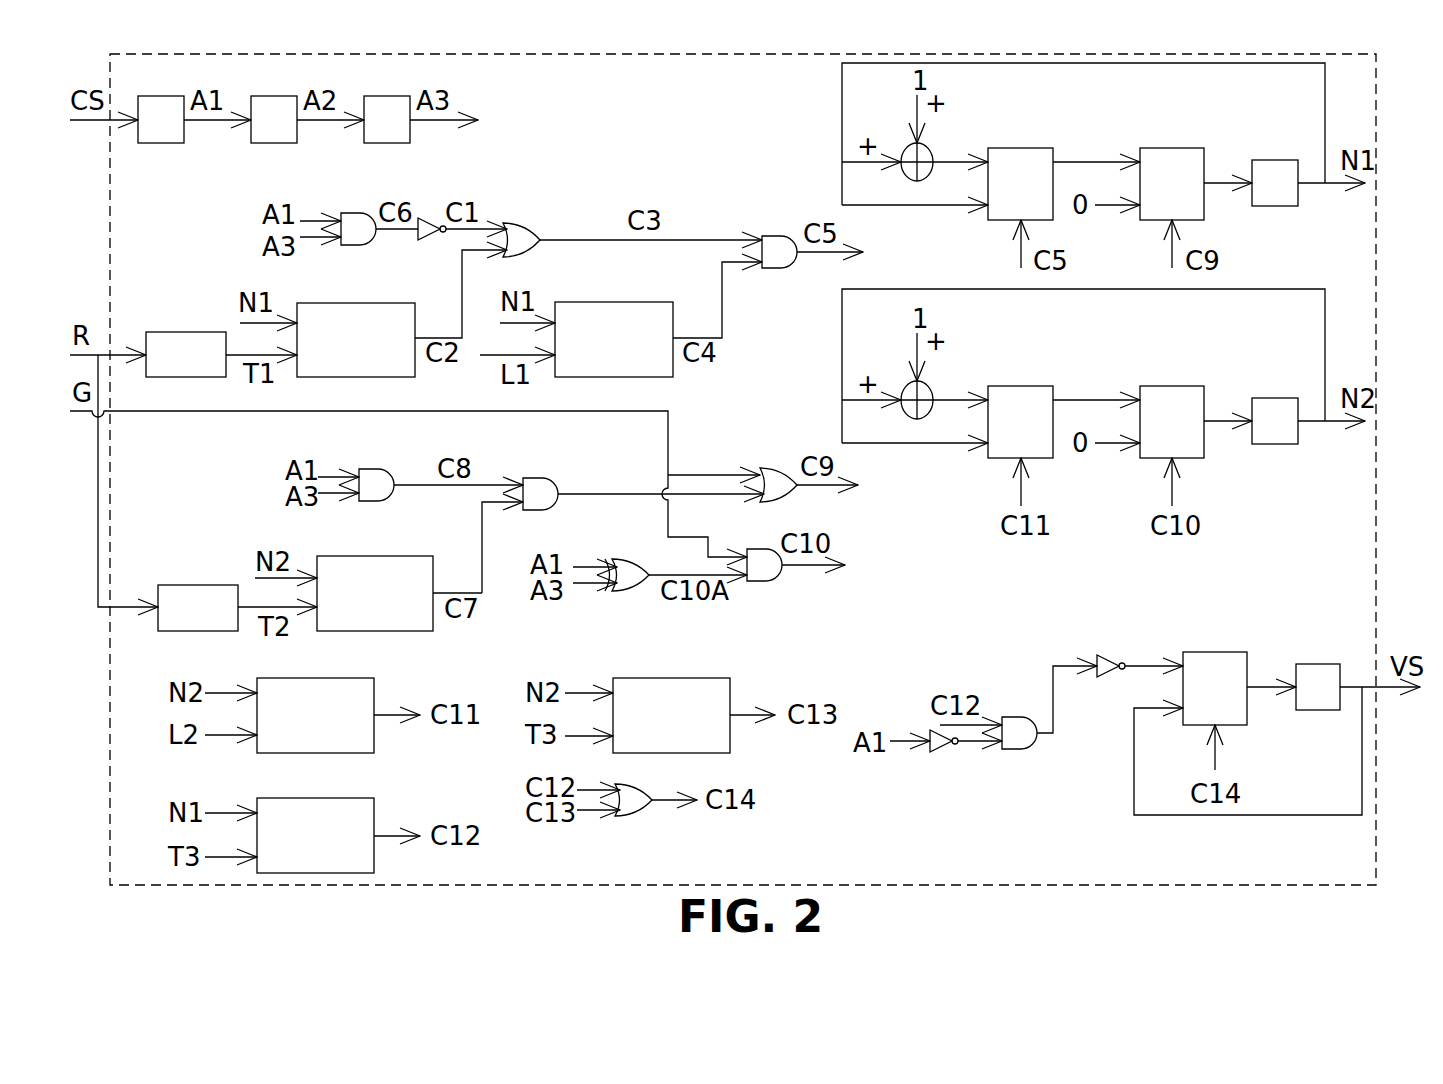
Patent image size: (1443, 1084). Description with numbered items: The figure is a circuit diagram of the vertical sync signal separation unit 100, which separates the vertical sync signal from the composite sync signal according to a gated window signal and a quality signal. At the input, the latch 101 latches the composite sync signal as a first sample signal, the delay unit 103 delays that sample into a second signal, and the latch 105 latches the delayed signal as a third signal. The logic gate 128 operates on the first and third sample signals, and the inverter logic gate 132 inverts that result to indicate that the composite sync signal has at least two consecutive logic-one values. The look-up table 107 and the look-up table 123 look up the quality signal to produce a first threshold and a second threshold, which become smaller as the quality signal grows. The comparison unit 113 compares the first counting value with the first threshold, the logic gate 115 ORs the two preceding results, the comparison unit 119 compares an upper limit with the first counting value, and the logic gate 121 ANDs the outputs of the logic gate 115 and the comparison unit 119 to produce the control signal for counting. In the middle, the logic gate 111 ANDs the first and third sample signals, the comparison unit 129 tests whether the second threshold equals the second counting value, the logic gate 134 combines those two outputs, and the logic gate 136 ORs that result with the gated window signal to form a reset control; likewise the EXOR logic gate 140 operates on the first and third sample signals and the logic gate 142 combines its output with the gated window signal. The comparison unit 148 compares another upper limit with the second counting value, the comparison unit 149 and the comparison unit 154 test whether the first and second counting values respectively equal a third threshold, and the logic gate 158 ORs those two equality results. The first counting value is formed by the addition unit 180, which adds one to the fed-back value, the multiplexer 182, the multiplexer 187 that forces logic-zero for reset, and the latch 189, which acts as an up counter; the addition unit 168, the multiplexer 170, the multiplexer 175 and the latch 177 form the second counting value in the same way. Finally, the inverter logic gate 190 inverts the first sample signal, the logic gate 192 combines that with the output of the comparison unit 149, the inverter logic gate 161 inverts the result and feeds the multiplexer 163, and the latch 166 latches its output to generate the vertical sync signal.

The vertical sync signal separation unit 100 is at (1377, 78).
The latch 101 is at (171, 95).
The delay unit 103 is at (283, 95).
The latch 105 is at (395, 95).
The look-up table 107 is at (188, 330).
The logic gate 111 is at (374, 469).
The comparison unit 113 is at (358, 303).
The logic gate 115 is at (518, 222).
The comparison unit 119 is at (613, 302).
The logic gate 121 is at (773, 234).
The look-up table 123 is at (200, 585).
The logic gate 128 is at (356, 213).
The comparison unit 129 is at (378, 556).
The logic gate 132 is at (427, 215).
The logic gate 134 is at (536, 478).
The logic gate 136 is at (773, 468).
The logic gate 140 is at (627, 594).
The logic gate 142 is at (758, 582).
The comparison unit 148 is at (316, 678).
The comparison unit 149 is at (316, 798).
The comparison unit 154 is at (673, 678).
The logic gate 158 is at (623, 816).
The logic gate 161 is at (1104, 655).
The multiplexer 163 is at (1213, 652).
The latch 166 is at (1318, 664).
The addition unit 168 is at (930, 386).
The multiplexer 170 is at (1021, 386).
The multiplexer 175 is at (1171, 386).
The latch 177 is at (1275, 398).
The addition unit 180 is at (930, 148).
The multiplexer 182 is at (1021, 148).
The multiplexer 187 is at (1171, 148).
The latch 189 is at (1275, 160).
The logic gate 190 is at (937, 753).
The logic gate 192 is at (1014, 749).